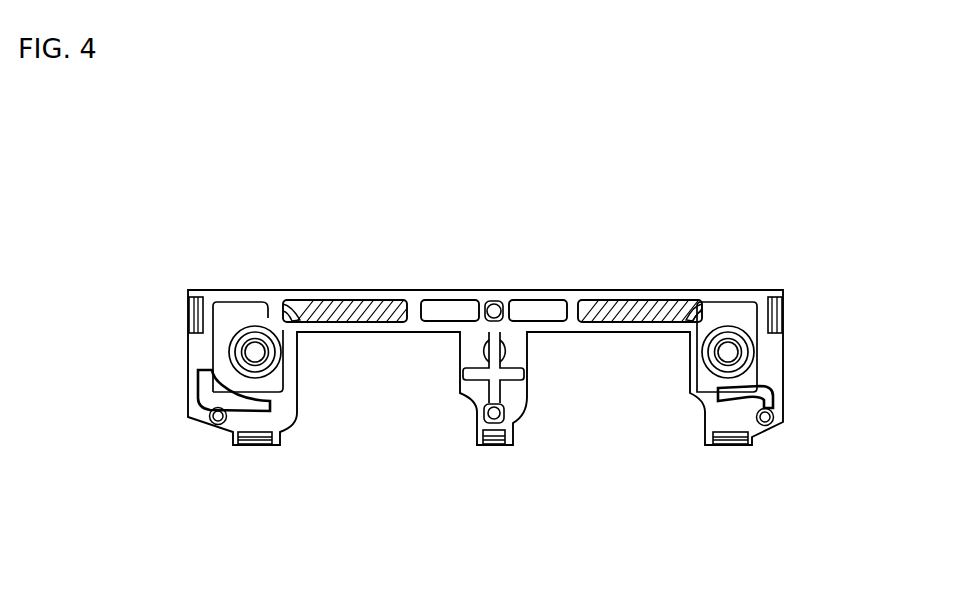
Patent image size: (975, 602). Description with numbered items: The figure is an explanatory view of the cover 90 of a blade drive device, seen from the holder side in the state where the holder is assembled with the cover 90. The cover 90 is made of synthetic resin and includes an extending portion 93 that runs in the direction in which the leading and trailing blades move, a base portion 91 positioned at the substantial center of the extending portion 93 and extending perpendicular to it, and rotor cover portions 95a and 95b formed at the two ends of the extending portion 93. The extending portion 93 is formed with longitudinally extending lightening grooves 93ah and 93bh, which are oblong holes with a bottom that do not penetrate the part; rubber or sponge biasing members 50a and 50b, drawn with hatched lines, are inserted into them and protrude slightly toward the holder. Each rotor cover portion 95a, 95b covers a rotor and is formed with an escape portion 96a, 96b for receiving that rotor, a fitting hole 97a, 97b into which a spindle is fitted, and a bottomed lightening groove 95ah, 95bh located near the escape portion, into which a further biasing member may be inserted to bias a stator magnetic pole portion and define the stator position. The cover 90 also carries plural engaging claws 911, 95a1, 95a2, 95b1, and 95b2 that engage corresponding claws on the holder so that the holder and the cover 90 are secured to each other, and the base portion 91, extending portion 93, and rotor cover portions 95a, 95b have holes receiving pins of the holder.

The cover 90 is at (705, 290).
The base portion 91 is at (519, 403).
The engaging claw 911 is at (495, 445).
The extending portion 93 is at (496, 300).
The lightening groove 93ah is at (297, 300).
The lightening groove 93bh is at (580, 300).
The biasing member 50a is at (386, 305).
The biasing member 50b is at (652, 305).
The rotor cover portion 95a is at (189, 340).
The engaging claw 95a1 is at (255, 445).
The engaging claw 95a2 is at (188, 297).
The lightening groove 95ah is at (199, 395).
The escape portion 96a is at (225, 355).
The fitting hole 97a is at (255, 352).
The rotor cover portion 95b is at (784, 392).
The engaging claw 95b1 is at (730, 445).
The engaging claw 95b2 is at (783, 312).
The lightening groove 95bh is at (745, 410).
The escape portion 96b is at (765, 360).
The fitting hole 97b is at (728, 352).